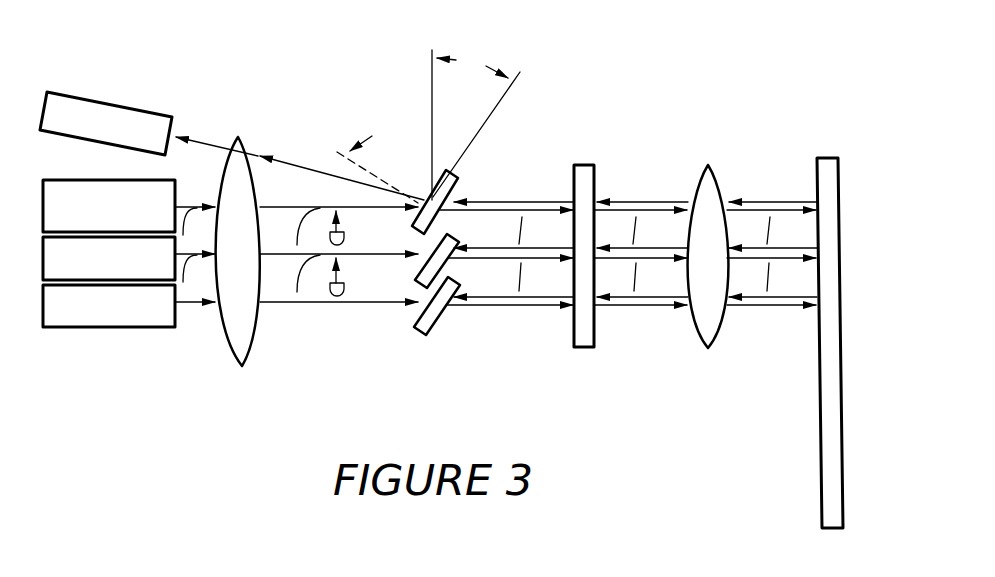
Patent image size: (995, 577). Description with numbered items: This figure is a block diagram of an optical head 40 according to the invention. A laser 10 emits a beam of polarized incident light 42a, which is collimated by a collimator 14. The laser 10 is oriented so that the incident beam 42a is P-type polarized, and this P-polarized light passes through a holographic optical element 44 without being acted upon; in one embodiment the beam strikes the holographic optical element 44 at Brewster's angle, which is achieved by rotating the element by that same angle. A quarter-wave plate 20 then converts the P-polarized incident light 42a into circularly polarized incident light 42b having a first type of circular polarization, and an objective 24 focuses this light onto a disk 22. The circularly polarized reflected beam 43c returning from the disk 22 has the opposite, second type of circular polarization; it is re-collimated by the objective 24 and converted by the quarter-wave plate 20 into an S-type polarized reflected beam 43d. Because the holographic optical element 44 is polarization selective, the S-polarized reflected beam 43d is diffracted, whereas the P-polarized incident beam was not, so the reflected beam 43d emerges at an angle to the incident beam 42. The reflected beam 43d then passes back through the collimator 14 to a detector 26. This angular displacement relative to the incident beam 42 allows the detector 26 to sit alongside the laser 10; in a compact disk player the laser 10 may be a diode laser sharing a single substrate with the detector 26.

The laser 10 is at (123, 328).
The collimator 14 is at (238, 137).
The quarter-wave plate 20 is at (583, 165).
The disk 22 is at (837, 166).
The objective 24 is at (705, 165).
The detector 26 is at (112, 93).
The optical head 40 is at (529, 80).
The incident beam 42 is at (197, 303).
The polarized incident light 42a is at (336, 309).
The circularly polarized incident light 42b is at (643, 310).
The circularly polarized reflected beam 43c is at (633, 199).
The S-type polarized reflected beam 43d is at (303, 162).
The holographic optical element 44 is at (450, 321).